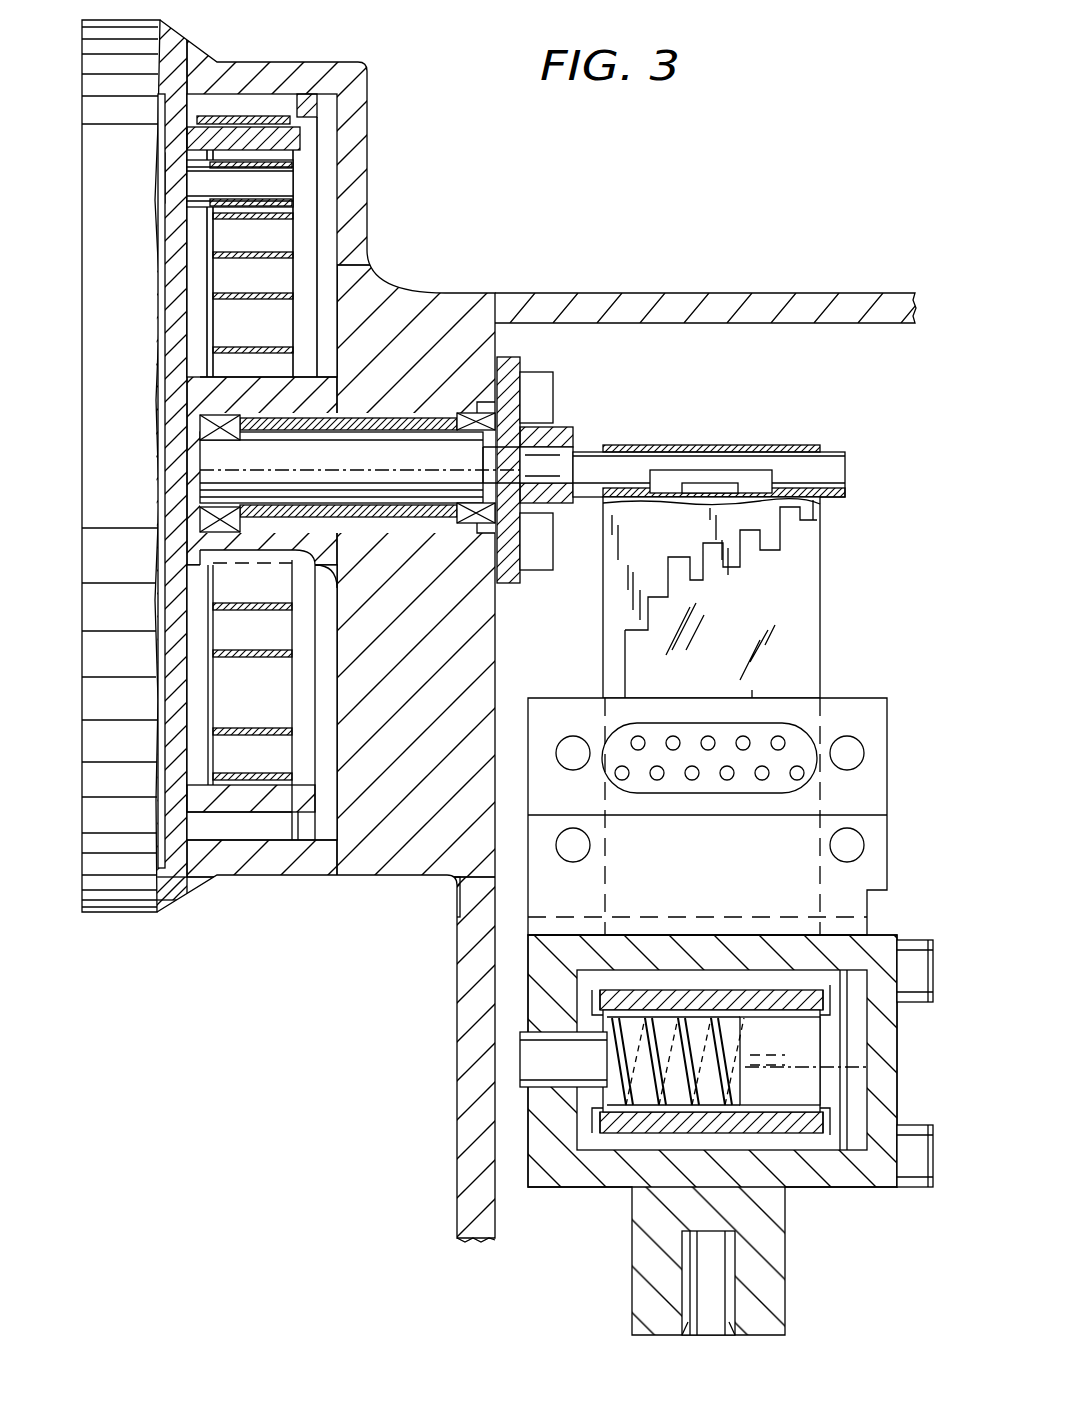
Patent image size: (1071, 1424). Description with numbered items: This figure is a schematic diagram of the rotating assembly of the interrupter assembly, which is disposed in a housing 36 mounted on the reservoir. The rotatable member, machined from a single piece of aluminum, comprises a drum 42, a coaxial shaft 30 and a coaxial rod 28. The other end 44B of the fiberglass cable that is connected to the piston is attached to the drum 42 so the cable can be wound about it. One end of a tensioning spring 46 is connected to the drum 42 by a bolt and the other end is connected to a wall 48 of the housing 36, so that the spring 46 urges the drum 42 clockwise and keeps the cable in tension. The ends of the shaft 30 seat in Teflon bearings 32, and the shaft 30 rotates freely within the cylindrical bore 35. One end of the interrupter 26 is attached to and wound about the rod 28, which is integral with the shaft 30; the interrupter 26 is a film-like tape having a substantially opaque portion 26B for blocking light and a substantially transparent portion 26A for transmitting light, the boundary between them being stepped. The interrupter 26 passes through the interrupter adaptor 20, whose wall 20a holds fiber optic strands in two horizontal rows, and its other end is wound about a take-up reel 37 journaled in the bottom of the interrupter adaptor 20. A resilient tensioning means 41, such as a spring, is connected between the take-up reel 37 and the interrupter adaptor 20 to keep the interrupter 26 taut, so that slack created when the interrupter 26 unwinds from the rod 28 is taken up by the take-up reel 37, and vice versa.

The interrupter adaptor 20 is at (739, 1058).
The wall of interrupter adaptor 20a is at (880, 708).
The interrupter 26 is at (753, 598).
The substantially transparent portion 26A is at (760, 676).
The substantially opaque portion 26B is at (690, 549).
The rod 28 is at (582, 462).
The shaft 30 is at (367, 482).
The bearings 32 is at (512, 415).
The cylindrical bore 35 is at (490, 320).
The housing 36 is at (400, 340).
The take-up reel 37 is at (832, 990).
The resilient tensioning means 41 is at (633, 1150).
The drum 42 is at (322, 117).
The other end of cable 44B is at (258, 116).
The spring 46 is at (270, 258).
The wall of housing 48 is at (207, 535).